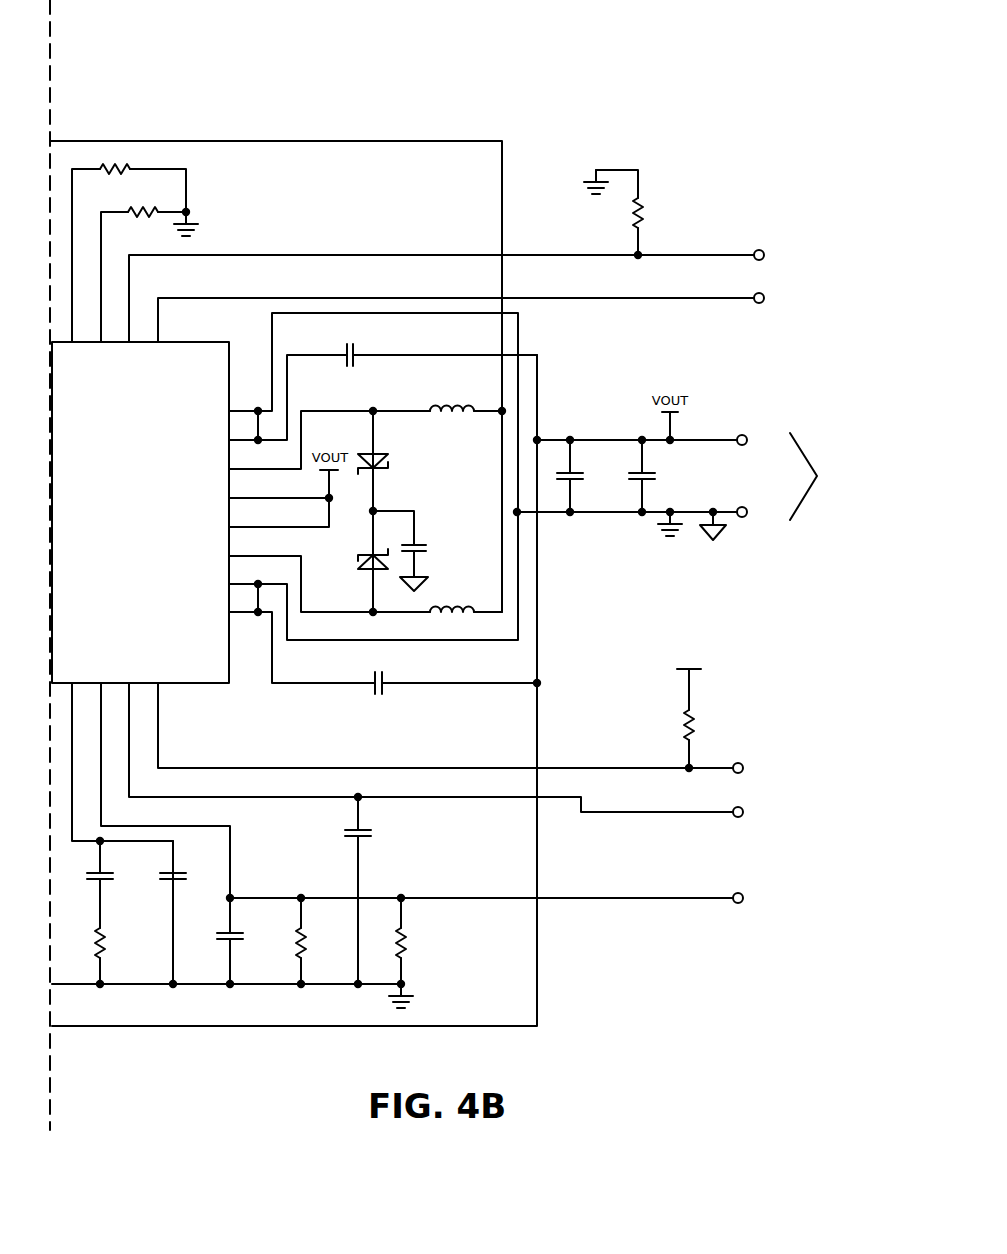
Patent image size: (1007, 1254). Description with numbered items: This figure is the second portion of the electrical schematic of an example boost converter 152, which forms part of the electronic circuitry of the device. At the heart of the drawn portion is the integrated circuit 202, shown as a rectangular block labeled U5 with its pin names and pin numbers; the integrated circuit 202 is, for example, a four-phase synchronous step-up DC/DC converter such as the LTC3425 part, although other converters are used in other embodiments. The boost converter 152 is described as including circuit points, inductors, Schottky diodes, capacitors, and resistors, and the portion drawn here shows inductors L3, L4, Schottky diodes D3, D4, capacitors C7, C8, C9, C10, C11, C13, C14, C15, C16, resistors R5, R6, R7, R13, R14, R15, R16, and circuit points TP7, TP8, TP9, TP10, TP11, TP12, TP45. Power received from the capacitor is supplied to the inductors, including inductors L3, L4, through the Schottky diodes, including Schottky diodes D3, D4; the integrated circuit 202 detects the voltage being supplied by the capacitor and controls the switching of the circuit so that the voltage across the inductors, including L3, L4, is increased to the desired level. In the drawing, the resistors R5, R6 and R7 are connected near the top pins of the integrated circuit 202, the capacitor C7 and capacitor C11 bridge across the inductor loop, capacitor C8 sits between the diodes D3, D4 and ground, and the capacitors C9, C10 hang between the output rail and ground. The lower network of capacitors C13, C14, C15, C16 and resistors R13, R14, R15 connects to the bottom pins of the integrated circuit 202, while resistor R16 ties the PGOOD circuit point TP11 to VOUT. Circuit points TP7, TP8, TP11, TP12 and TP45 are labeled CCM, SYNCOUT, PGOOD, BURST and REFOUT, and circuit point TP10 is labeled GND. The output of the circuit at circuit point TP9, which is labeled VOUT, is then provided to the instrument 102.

The boost converter 152 is at (582, 98).
The integrated circuit 202 is at (140, 512).
The instrument 102 is at (841, 476).
The boost converter IC U5 is at (152, 516).
The resistor R5 is at (129, 245).
The resistor R6 is at (149, 266).
The resistor R7 is at (624, 214).
The resistor R13 is at (114, 957).
The resistor R14 is at (316, 941).
The resistor R15 is at (412, 951).
The resistor R16 is at (445, 710).
The capacitor C7 is at (383, 382).
The capacitor C8 is at (409, 549).
The capacitor C9 is at (580, 476).
The capacitor C10 is at (656, 476).
The capacitor C11 is at (384, 653).
The capacitor C13 is at (113, 883).
The capacitor C14 is at (186, 912).
The capacitor C15 is at (243, 941).
The capacitor C16 is at (371, 890).
The inductor L3 is at (365, 585).
The inductor L4 is at (367, 426).
The Schottky diode D3 is at (384, 461).
The Schottky diode D4 is at (362, 561).
The circuit point TP7 is at (777, 246).
The circuit point TP8 is at (794, 289).
The circuit point TP9 is at (762, 432).
The circuit point TP10 is at (759, 503).
The circuit point TP11 is at (763, 760).
The circuit point TP12 is at (761, 890).
The test point REFOUT TP45 is at (765, 804).